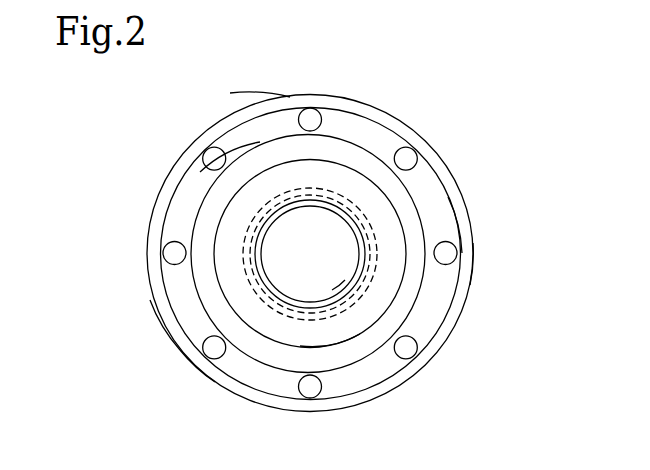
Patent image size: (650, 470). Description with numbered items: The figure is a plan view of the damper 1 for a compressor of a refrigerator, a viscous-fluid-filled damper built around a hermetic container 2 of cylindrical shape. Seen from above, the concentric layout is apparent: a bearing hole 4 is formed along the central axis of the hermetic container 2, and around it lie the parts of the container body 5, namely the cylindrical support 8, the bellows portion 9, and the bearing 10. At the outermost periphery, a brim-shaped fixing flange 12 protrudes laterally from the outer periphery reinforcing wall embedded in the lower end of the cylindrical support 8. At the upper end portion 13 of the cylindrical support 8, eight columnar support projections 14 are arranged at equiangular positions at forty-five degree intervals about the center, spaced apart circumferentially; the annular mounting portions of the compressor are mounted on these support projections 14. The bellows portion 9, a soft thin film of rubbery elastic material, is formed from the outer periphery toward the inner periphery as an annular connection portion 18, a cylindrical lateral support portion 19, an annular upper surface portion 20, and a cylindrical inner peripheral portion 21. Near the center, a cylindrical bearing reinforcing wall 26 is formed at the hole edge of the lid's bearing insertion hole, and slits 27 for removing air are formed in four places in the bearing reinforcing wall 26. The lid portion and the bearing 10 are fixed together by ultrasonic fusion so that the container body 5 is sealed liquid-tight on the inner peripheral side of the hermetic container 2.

The damper 1 is at (520, 120).
The hermetic container 2 is at (422, 137).
The bearing hole 4 is at (270, 228).
The container body 5 is at (183, 353).
The cylindrical support 8 is at (150, 240).
The bellows portion 9 is at (448, 197).
The bearing 10 is at (262, 253).
The fixing flange 12 is at (473, 243).
The upper end portion 13 is at (295, 122).
The support projections 14 is at (401, 148).
The annular connection portion 18 is at (260, 102).
The cylindrical lateral support portion 19 is at (242, 146).
The annular upper surface portion 20 is at (346, 338).
The cylindrical inner peripheral portion 21 is at (332, 290).
The bearing reinforcing wall 26 is at (167, 332).
The slits 27 is at (247, 290).